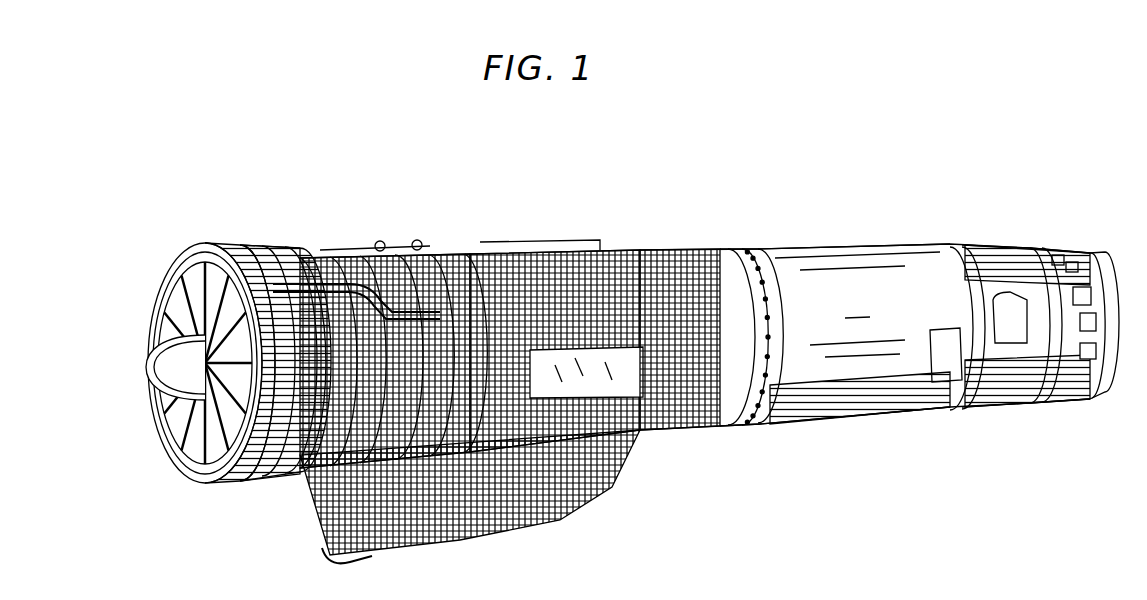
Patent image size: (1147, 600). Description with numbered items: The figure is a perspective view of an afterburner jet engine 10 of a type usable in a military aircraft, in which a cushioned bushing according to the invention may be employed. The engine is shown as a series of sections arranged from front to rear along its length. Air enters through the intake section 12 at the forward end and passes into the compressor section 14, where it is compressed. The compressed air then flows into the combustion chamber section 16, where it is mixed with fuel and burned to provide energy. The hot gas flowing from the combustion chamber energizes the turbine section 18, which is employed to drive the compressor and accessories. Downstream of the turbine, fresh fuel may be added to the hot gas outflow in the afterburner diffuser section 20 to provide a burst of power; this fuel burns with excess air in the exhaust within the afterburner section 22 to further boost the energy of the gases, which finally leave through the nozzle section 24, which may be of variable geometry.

The afterburner jet engine 10 is at (347, 188).
The intake section 12 is at (142, 315).
The compressor section 14 is at (331, 228).
The combustion chamber section 16 is at (460, 233).
The turbine section 18 is at (602, 230).
The afterburner diffuser section 20 is at (670, 232).
The afterburner section 22 is at (816, 239).
The nozzle section 24 is at (1063, 243).